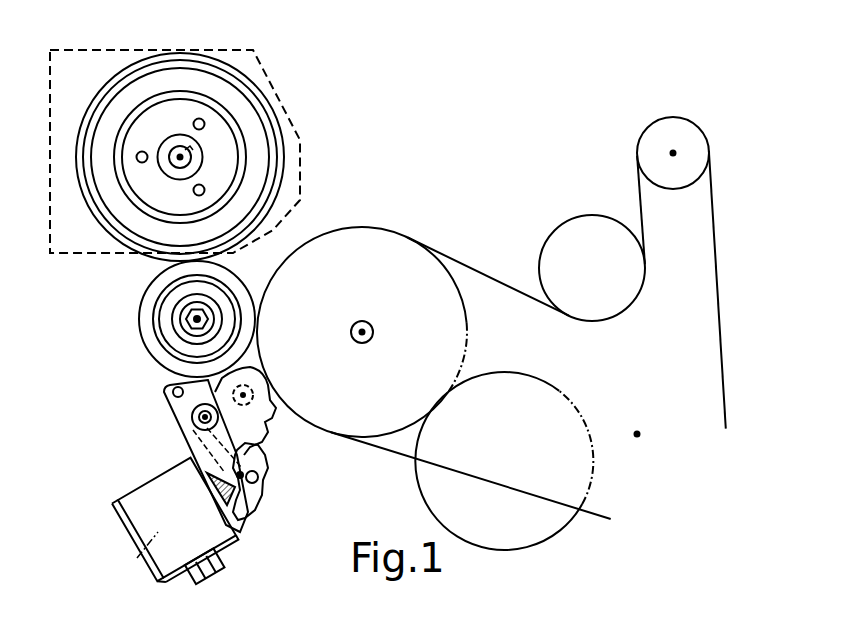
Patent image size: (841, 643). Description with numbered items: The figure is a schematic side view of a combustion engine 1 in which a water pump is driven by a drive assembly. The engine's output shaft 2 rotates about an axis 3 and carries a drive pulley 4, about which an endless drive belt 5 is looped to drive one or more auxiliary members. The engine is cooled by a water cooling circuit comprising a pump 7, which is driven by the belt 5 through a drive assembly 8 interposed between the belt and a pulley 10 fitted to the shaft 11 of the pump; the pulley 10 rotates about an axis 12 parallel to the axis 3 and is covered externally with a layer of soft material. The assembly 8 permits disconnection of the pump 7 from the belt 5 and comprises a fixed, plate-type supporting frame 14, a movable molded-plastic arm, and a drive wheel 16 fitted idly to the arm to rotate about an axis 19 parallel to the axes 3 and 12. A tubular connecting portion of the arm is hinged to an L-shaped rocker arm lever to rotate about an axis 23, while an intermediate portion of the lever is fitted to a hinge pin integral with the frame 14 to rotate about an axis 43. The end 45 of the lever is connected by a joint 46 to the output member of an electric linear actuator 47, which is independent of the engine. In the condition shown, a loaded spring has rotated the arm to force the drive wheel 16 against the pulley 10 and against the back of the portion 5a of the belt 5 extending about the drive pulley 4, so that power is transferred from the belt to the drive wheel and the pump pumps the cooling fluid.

The combustion engine 1 is at (350, 210).
The output shaft 2 is at (362, 322).
The axis 3 is at (369, 324).
The drive pulley 4 is at (405, 293).
The endless drive belt 5 is at (462, 473).
The portion of belt 5a is at (287, 257).
The pump 7 is at (285, 86).
The drive assembly 8 is at (152, 398).
The pulley 10 is at (253, 133).
The shaft 11 is at (187, 163).
The axis 12 is at (179, 148).
The fixed supporting frame 14 is at (243, 508).
The drive wheel 16 is at (152, 310).
The axis 19 is at (183, 318).
The axis 23 is at (257, 393).
The axis 43 is at (193, 426).
The end of lever 45 is at (233, 457).
The joint 46 is at (247, 490).
The electric linear actuator 47 is at (135, 568).